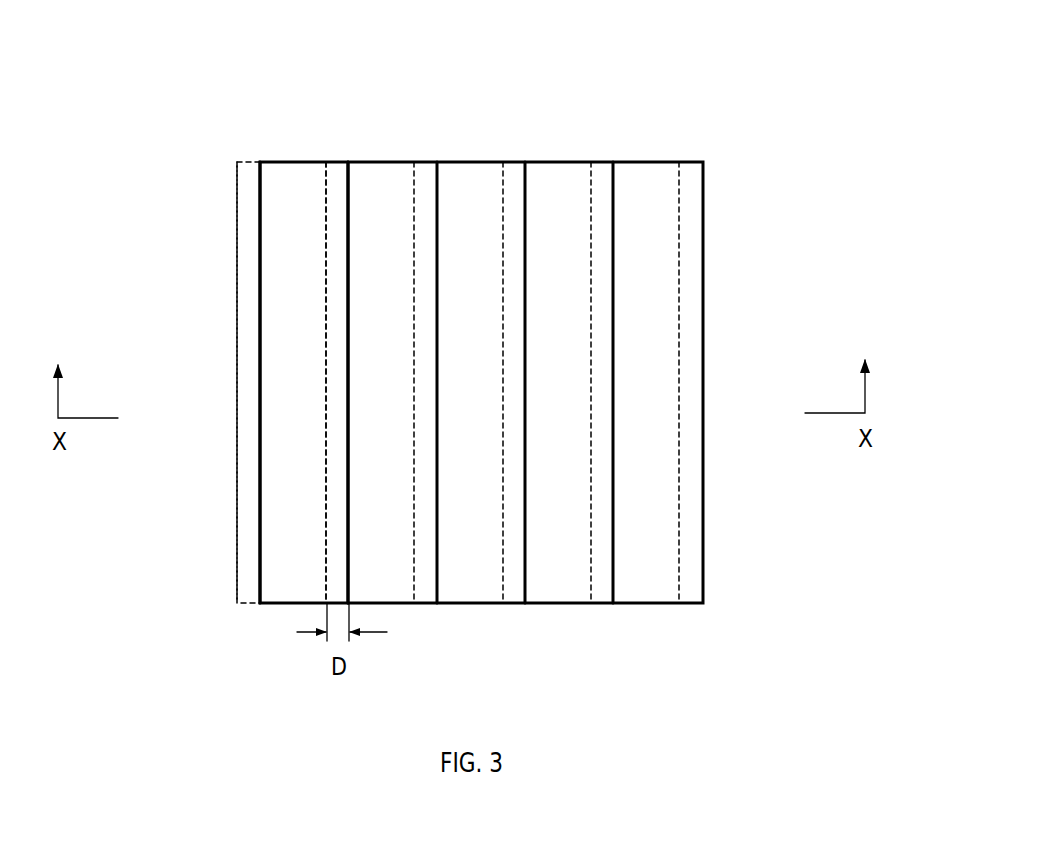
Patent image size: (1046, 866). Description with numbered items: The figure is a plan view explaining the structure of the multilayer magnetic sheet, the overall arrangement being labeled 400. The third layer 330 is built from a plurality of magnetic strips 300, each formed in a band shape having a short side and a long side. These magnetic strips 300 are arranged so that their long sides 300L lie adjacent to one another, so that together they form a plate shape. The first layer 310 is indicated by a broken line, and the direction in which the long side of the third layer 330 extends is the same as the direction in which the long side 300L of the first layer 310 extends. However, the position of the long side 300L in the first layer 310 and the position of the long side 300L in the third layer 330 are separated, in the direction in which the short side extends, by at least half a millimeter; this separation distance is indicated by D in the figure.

The display panel assembly 400 is at (756, 97).
The third layer 330 is at (712, 240).
The magnetic strip 300 is at (303, 186).
The long side 300L is at (260, 216).
The first layer 310 is at (233, 631).